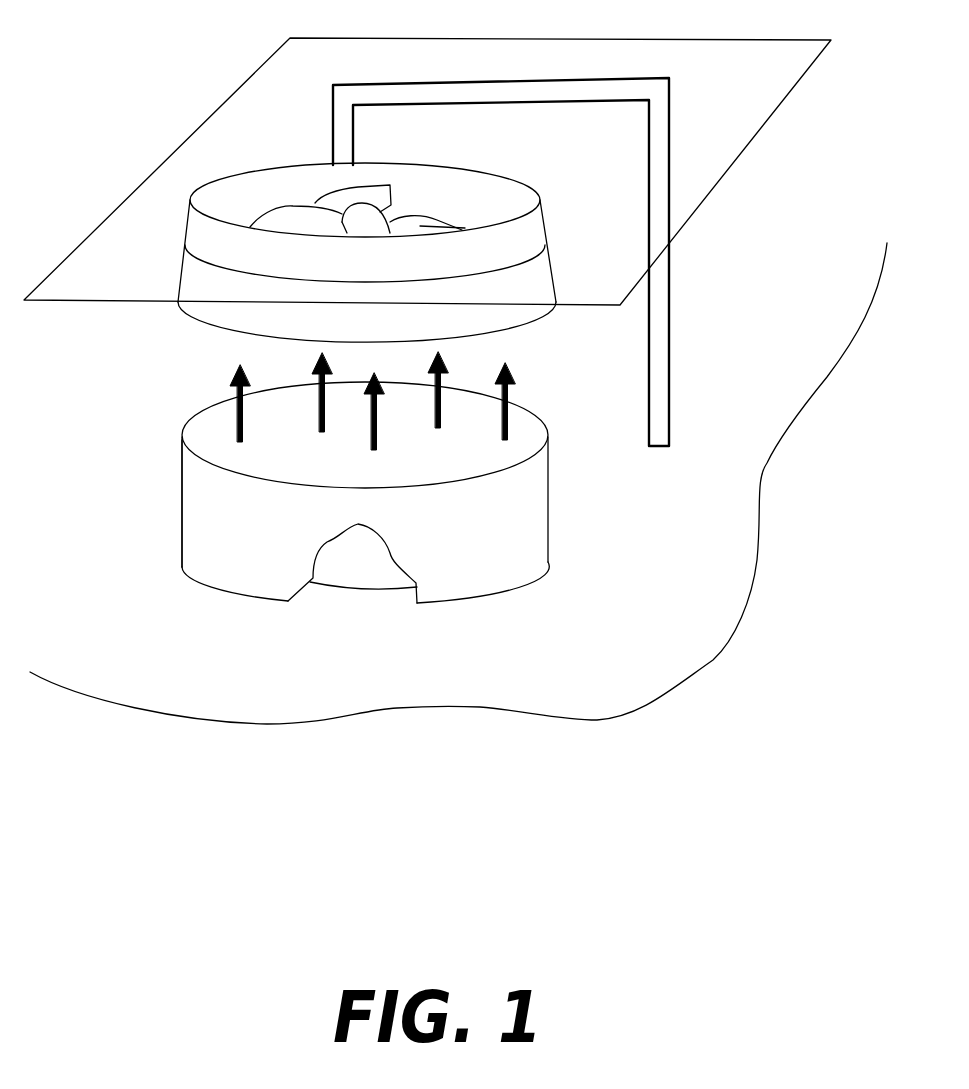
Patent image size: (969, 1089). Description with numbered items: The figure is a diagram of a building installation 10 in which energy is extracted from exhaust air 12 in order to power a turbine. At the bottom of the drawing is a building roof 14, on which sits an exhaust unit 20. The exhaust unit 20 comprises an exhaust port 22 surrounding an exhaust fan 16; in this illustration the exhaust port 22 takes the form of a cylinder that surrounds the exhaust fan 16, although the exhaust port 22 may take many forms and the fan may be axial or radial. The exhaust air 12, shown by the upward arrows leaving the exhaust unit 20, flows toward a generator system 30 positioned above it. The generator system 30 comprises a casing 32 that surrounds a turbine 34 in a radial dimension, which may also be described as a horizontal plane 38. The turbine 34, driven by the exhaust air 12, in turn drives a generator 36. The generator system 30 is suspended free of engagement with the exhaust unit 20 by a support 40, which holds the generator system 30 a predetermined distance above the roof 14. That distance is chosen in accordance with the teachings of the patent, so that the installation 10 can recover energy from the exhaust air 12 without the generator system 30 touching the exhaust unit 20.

The building installation 10 is at (680, 27).
The exhaust air 12 is at (477, 378).
The building roof 14 is at (667, 612).
The exhaust fan 16 is at (355, 568).
The exhaust unit 20 is at (545, 512).
The exhaust port 22 is at (205, 554).
The generator system 30 is at (220, 133).
The casing 32 is at (518, 278).
The turbine 34 is at (413, 227).
The generator 36 is at (350, 208).
The horizontal plane 38 is at (718, 157).
The support 40 is at (663, 105).